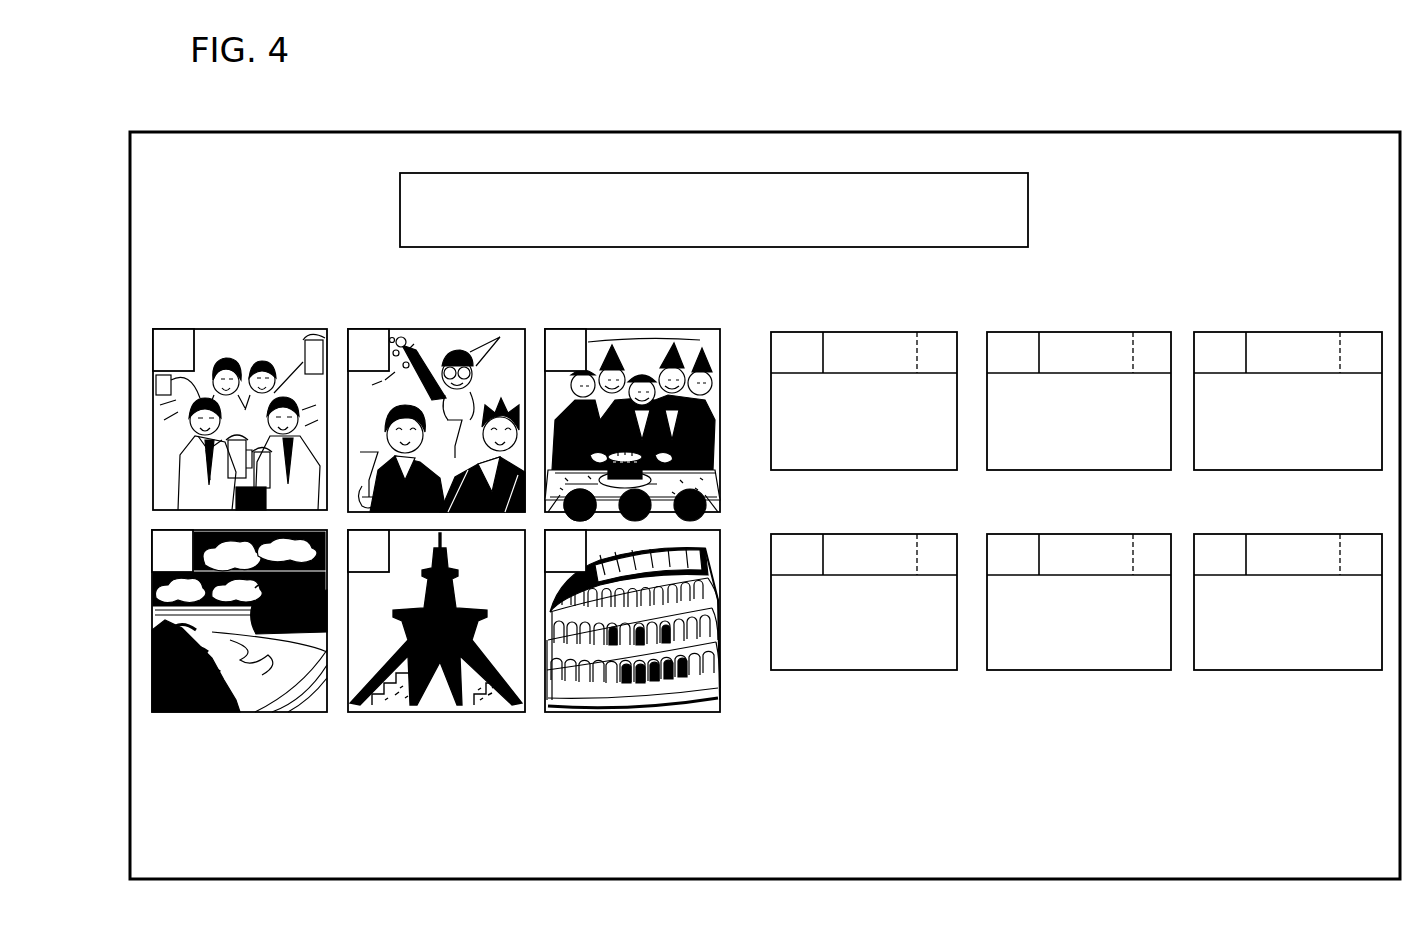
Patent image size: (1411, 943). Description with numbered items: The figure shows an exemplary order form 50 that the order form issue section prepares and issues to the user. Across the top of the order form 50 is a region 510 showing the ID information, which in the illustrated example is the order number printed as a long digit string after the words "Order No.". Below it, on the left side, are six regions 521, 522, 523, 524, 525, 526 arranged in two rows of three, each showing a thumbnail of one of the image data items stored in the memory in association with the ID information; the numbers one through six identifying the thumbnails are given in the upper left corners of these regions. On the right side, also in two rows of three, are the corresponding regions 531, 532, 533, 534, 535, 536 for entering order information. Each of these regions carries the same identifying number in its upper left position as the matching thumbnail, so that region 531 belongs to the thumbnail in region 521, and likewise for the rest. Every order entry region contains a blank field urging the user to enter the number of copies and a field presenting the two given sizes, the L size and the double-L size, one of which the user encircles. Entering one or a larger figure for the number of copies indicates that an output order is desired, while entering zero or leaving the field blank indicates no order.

The order form 50 is at (1218, 132).
The region showing ID information 510 is at (1028, 212).
The region showing thumbnail of image data item 1 521 is at (237, 329).
The region showing thumbnail of image data item 2 522 is at (437, 329).
The region showing thumbnail of image data item 3 523 is at (625, 329).
The region showing thumbnail of image data item 4 524 is at (245, 712).
The region showing thumbnail of image data item 5 525 is at (435, 712).
The region showing thumbnail of image data item 6 526 is at (626, 712).
The region for entering order information on image data item 1 531 is at (866, 332).
The region for entering order information on image data item 2 532 is at (1086, 332).
The region for entering order information on image data item 3 533 is at (1306, 332).
The region for entering order information on image data item 4 534 is at (880, 670).
The region for entering order information on image data item 5 535 is at (1082, 670).
The region for entering order information on image data item 6 536 is at (1284, 670).